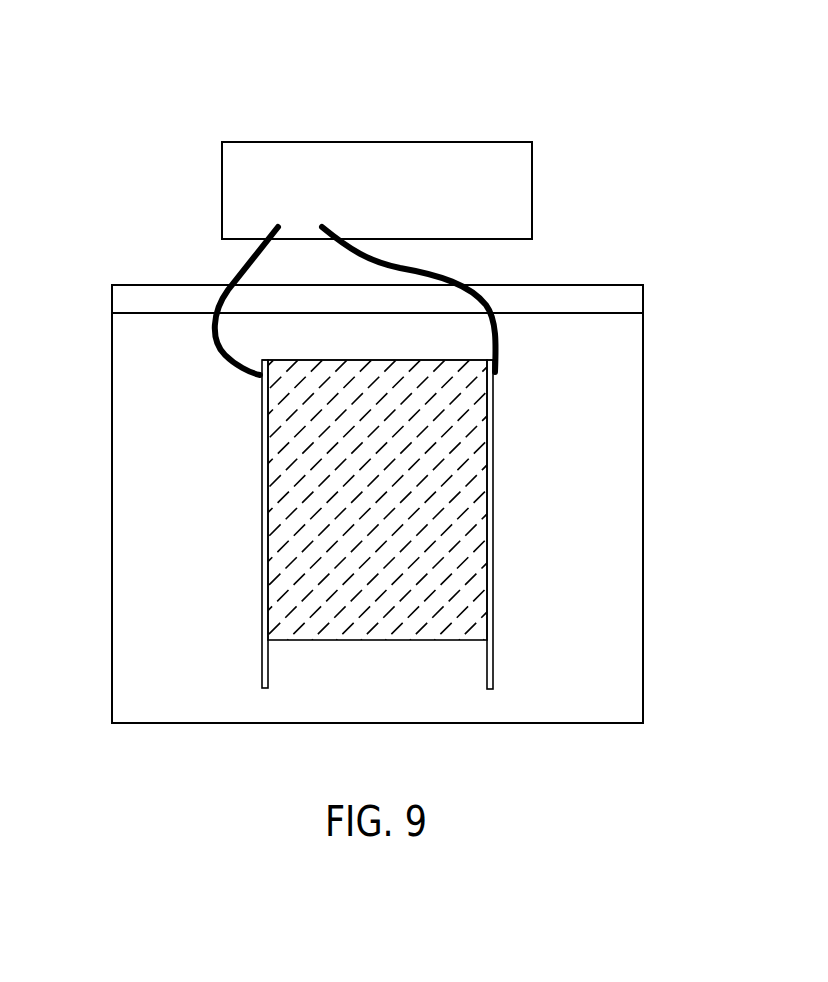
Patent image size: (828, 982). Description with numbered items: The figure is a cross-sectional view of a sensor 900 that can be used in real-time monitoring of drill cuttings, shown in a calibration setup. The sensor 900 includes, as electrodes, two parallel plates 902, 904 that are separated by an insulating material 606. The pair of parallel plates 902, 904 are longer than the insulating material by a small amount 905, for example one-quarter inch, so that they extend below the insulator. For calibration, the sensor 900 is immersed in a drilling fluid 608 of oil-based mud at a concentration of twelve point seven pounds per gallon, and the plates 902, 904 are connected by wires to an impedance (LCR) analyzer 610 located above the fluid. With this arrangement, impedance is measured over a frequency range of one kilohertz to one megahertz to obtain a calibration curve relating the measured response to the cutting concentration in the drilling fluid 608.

The sensor 900 is at (596, 93).
The impedance (LCR) analyzer 610 is at (385, 141).
The drilling fluid 608 is at (170, 547).
The insulating material 606 is at (383, 640).
The parallel plate 902 is at (262, 442).
The parallel plate 904 is at (493, 457).
The small amount 905 is at (255, 642).